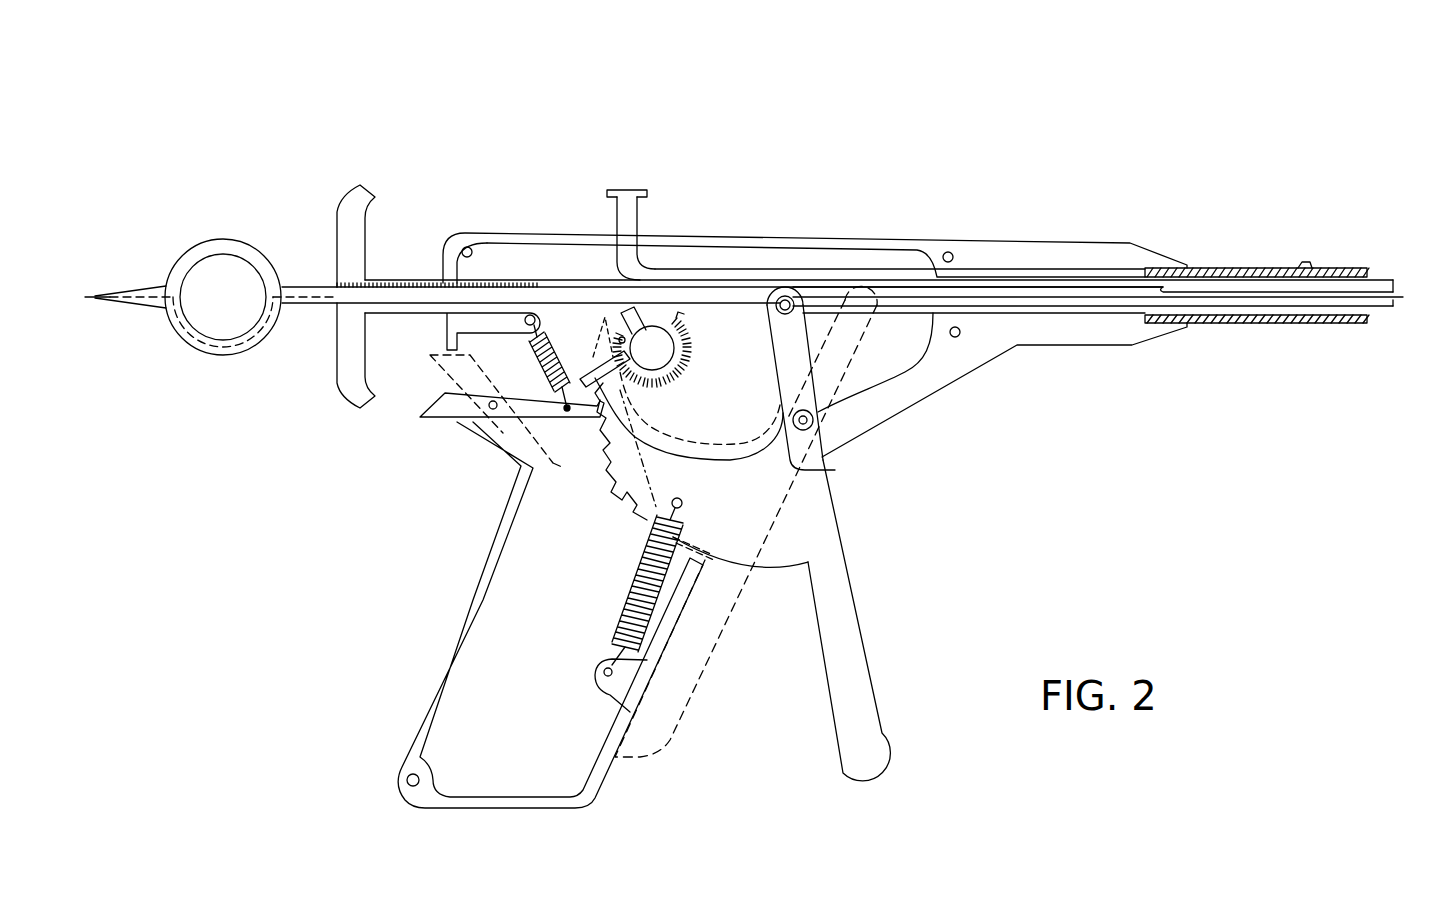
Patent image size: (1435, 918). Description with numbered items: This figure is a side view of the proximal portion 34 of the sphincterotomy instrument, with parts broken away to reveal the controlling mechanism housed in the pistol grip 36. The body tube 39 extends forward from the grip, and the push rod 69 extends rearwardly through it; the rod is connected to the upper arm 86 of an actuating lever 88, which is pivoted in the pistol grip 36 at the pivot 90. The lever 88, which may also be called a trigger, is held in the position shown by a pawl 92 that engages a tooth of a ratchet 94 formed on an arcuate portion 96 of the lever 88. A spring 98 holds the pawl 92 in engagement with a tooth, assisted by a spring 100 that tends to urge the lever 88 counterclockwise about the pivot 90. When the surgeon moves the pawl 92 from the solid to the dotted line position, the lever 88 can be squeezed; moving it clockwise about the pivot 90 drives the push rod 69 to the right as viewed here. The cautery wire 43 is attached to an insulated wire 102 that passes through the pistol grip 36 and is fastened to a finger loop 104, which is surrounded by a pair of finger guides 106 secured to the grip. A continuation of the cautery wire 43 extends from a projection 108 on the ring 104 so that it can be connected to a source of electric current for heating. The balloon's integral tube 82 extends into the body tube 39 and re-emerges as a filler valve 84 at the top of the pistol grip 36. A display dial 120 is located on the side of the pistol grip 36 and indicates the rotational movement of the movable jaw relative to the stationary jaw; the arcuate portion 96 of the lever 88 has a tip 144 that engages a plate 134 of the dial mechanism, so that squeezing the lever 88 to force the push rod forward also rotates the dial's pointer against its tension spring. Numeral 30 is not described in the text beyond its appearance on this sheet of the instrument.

The surgical instrument housing 30 is at (800, 166).
The proximal portion 34 is at (413, 108).
The pistol grip 36 is at (415, 630).
The body tube 39 is at (1225, 268).
The cautery wire 43 is at (100, 300).
The push rod 69 is at (1383, 323).
The integral tube 82 is at (1385, 280).
The filler valve 84 is at (613, 213).
The upper arm 86 is at (775, 345).
The actuating lever 88 is at (826, 540).
The pivot 90 is at (837, 472).
The pawl 92 is at (440, 410).
The ratchet 94 is at (607, 463).
The arcuate portion 96 is at (643, 492).
The spring 98 is at (547, 372).
The spring 100 is at (627, 608).
The insulated wire 102 is at (1063, 293).
The finger loop 104 is at (228, 238).
The finger guides 106 is at (337, 232).
The projection 108 is at (150, 288).
The display dial 120 is at (660, 322).
The plate 134 is at (588, 378).
The tip 144 is at (632, 402).